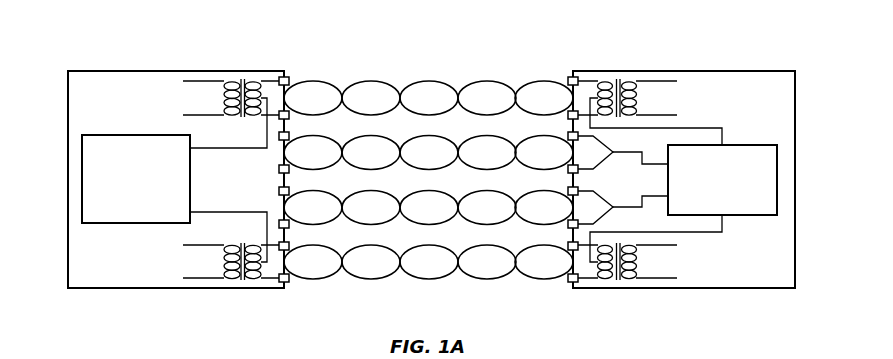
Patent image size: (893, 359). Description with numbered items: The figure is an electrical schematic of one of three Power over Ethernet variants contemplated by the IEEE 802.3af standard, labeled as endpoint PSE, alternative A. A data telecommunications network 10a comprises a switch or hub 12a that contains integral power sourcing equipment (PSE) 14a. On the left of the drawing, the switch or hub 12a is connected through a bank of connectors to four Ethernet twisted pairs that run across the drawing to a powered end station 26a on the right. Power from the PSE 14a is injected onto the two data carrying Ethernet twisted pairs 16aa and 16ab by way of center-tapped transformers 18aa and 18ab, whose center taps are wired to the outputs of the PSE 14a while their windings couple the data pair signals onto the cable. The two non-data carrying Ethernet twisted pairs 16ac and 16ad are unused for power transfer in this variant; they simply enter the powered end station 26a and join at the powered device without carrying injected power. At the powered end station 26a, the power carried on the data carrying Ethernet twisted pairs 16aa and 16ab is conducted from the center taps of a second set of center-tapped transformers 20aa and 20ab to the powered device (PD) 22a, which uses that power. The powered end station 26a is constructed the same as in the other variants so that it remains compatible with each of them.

The data telecommunications network 10a is at (484, 48).
The switch or hub 12a is at (248, 70).
The power sourcing equipment 14a is at (80, 178).
The data carrying Ethernet twisted pair 16aa is at (372, 81).
The data carrying Ethernet twisted pair 16ab is at (372, 246).
The non-data carrying Ethernet twisted pair 16ac is at (372, 136).
The non-data carrying Ethernet twisted pair 16ad is at (372, 191).
The center-tapped transformer 18aa is at (254, 78).
The center-tapped transformer 18ab is at (252, 281).
The center-tapped transformer 20aa is at (604, 78).
The center-tapped transformer 20ab is at (605, 282).
The powered device 22a is at (783, 178).
The powered end station 26a is at (797, 266).